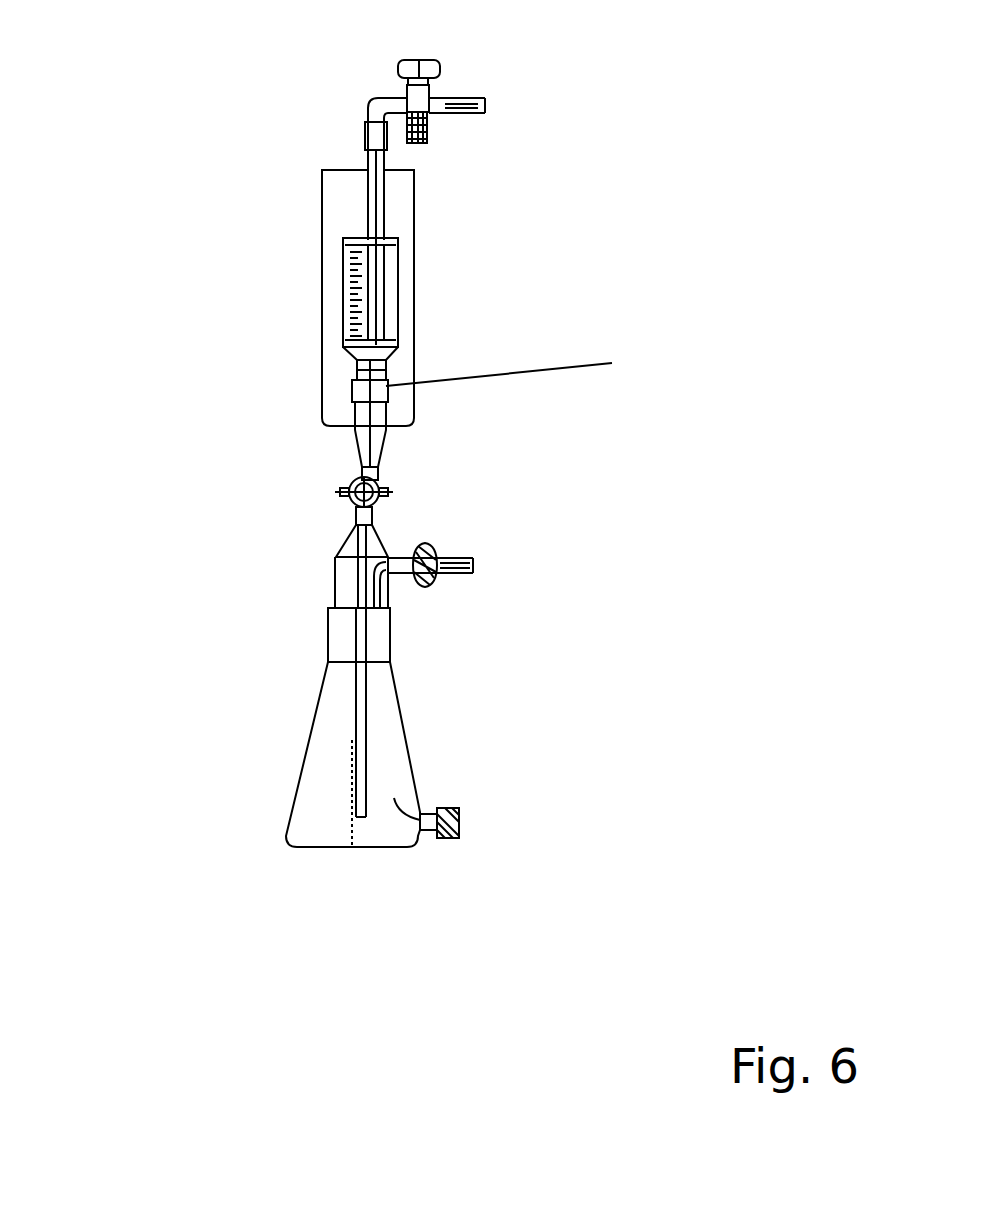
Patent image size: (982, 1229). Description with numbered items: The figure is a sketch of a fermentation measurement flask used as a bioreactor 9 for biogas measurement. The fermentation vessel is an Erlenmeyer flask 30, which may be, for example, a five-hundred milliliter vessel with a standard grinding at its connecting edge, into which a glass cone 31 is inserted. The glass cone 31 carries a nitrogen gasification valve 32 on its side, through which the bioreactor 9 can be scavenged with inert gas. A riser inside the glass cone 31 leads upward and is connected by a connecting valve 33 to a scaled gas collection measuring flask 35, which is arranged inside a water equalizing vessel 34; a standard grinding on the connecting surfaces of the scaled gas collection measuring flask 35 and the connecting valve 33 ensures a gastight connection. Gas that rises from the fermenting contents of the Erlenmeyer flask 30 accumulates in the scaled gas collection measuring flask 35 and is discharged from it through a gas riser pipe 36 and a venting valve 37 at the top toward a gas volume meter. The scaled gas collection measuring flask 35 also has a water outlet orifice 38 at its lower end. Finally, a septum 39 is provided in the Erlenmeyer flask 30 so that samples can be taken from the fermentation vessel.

The bioreactor 9 is at (232, 948).
The Erlenmeyer flask 30 is at (333, 765).
The glass cone 31 is at (345, 568).
The nitrogen gasification valve 32 is at (442, 588).
The connecting valve 33 is at (388, 483).
The water equalizing vessel 34 is at (414, 253).
The scaled gas collection measuring flask 35 is at (343, 290).
The gas riser pipe 36 is at (362, 165).
The venting valve 37 is at (440, 96).
The water outlet orifice 38 is at (348, 347).
The septum 39 is at (470, 824).